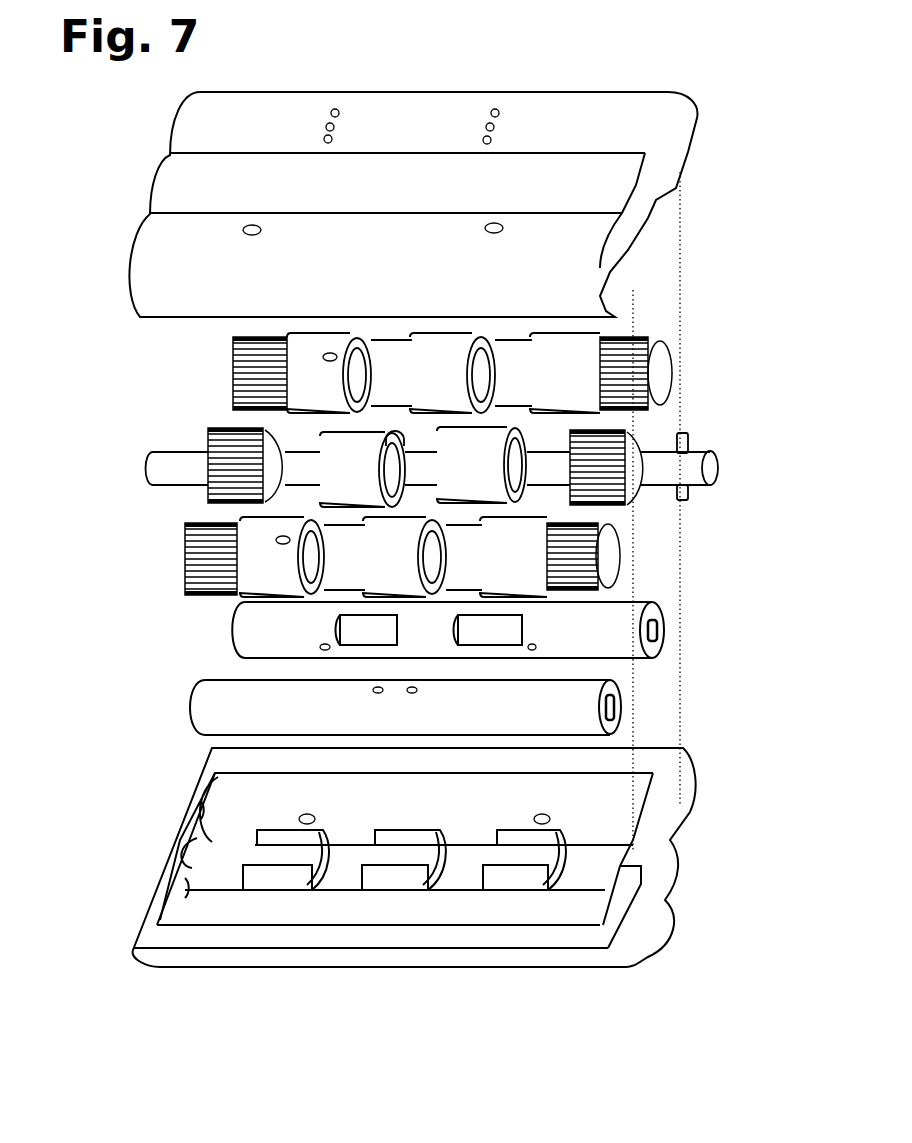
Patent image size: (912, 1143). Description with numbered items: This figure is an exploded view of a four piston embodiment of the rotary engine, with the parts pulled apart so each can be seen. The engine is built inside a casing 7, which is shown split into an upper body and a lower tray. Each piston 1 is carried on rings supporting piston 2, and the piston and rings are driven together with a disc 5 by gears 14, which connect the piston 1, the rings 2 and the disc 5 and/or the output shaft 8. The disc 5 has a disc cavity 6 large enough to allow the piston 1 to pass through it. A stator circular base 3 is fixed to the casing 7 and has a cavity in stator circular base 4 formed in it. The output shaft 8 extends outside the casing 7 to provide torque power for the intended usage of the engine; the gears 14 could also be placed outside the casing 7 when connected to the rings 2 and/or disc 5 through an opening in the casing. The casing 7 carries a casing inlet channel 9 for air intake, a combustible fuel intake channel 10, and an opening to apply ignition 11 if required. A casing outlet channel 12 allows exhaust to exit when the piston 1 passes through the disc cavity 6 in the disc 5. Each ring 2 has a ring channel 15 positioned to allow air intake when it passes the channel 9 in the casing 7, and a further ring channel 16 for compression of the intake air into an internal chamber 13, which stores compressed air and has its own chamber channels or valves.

The piston 1 is at (458, 587).
The rings supporting piston 2 is at (345, 337).
The stator circular base 3 is at (205, 715).
The cavity in stator circular base 4 is at (475, 630).
The disc 5 is at (493, 448).
The disc cavity 6 is at (405, 440).
The casing 7 is at (153, 905).
The output shaft 8 is at (172, 458).
The casing inlet channel/valve 9 is at (328, 139).
The combustible fuel intake channel/valve 10 is at (330, 127).
The opening to apply ignition 11 is at (335, 113).
The casing outlet channel 12 is at (497, 228).
The internal chamber 13 is at (412, 690).
The gears 14 is at (600, 543).
The ring channel/valve 15 is at (283, 540).
The ring channel/valve 16 is at (302, 522).